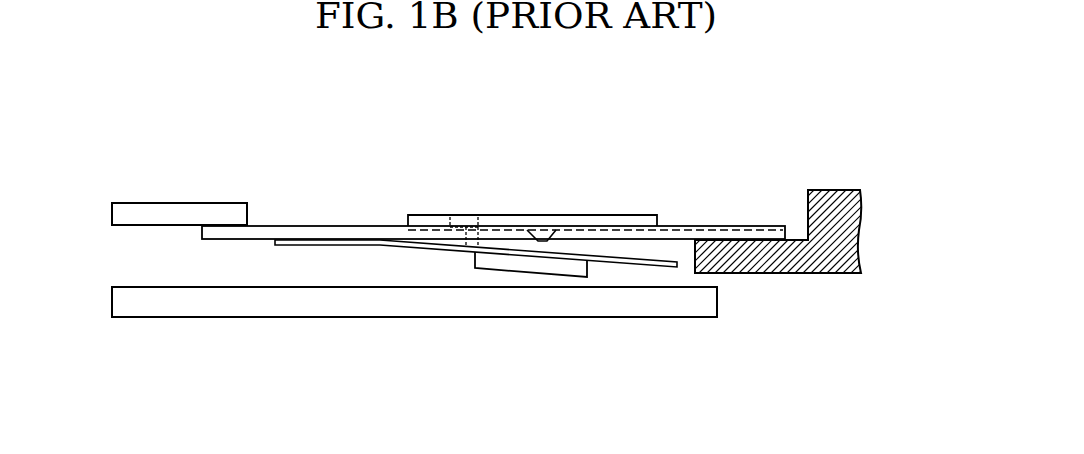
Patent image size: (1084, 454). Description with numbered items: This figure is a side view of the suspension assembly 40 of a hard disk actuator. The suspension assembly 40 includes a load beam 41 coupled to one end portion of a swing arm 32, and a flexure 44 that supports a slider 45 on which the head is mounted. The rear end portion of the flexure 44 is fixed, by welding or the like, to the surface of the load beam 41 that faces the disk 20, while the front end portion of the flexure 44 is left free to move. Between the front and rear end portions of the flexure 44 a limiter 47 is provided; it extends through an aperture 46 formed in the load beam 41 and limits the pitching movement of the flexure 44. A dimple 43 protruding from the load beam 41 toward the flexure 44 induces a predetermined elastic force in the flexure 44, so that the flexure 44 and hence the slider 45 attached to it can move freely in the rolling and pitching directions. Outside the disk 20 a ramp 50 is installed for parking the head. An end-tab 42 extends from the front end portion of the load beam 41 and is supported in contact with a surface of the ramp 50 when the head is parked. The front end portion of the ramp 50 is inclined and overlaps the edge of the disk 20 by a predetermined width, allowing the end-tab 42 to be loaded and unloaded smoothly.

The disk 20 is at (257, 303).
The swing arm 32 is at (203, 208).
The suspension assembly 40 is at (433, 178).
The load beam 41 is at (323, 232).
The end-tab 42 is at (733, 235).
The dimple 43 is at (545, 240).
The flexure 44 is at (450, 252).
The slider 45 is at (537, 268).
The aperture 46 is at (490, 236).
The limiter 47 is at (467, 217).
The ramp 50 is at (785, 264).